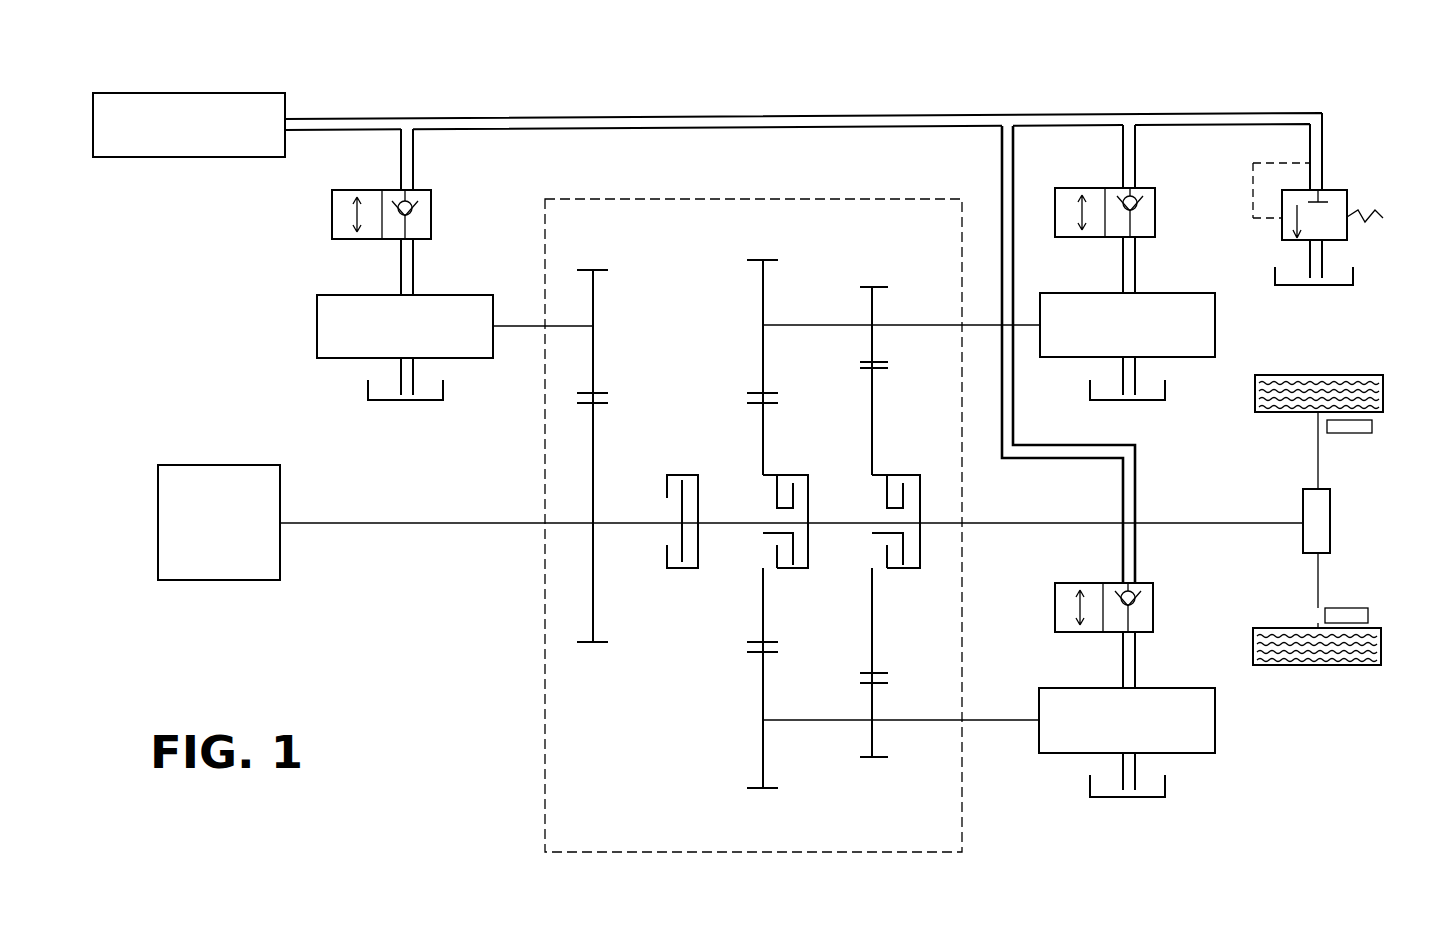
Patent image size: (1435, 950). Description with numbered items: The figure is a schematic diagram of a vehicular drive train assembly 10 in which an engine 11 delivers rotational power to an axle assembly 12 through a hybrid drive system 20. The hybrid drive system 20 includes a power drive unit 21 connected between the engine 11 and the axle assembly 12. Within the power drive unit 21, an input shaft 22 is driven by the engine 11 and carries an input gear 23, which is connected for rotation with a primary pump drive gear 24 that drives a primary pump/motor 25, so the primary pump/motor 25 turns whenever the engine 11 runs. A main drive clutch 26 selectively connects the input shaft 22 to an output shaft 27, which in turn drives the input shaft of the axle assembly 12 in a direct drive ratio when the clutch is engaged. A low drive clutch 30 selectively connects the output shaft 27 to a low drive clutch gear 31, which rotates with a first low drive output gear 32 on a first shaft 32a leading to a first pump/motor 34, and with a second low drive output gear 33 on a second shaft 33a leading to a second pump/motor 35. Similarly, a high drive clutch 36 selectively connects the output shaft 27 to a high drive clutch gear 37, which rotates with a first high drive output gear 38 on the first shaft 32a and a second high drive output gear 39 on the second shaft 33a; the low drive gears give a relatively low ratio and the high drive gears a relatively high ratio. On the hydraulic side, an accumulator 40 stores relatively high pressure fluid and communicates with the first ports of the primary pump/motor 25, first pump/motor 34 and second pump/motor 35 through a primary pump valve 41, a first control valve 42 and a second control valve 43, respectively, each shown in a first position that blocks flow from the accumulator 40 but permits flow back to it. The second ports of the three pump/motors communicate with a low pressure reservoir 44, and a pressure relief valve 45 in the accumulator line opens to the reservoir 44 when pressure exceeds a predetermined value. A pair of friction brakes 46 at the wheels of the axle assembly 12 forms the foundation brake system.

The drive train assembly 10 is at (457, 718).
The engine 11 is at (158, 497).
The axle assembly 12 is at (1322, 517).
The hybrid drive system 20 is at (1018, 95).
The power drive unit 21 is at (652, 199).
The input shaft 22 is at (367, 523).
The input gear 23 is at (593, 607).
The primary pump drive gear 24 is at (593, 300).
The primary pump/motor 25 is at (317, 335).
The main drive clutch 26 is at (680, 475).
The output shaft 27 is at (1010, 523).
The low drive clutch 30 is at (793, 475).
The low drive clutch gear 31 is at (763, 605).
The first low drive output gear 32 is at (763, 292).
The first shaft 32a is at (908, 325).
The second low drive output gear 33 is at (763, 750).
The second shaft 33a is at (902, 720).
The first pump/motor 34 is at (1170, 303).
The second pump/motor 35 is at (1177, 688).
The high drive clutch 36 is at (907, 475).
The high drive clutch gear 37 is at (872, 598).
The first high drive output gear 38 is at (872, 307).
The second high drive output gear 39 is at (872, 733).
The accumulator 40 is at (173, 157).
The primary pump valve 41 is at (337, 212).
The first control valve 42 is at (1067, 188).
The second control valve 43 is at (1055, 608).
The reservoir 44 is at (382, 400).
The pressure relief valve 45 is at (1330, 190).
The friction brakes 46 is at (1363, 428).